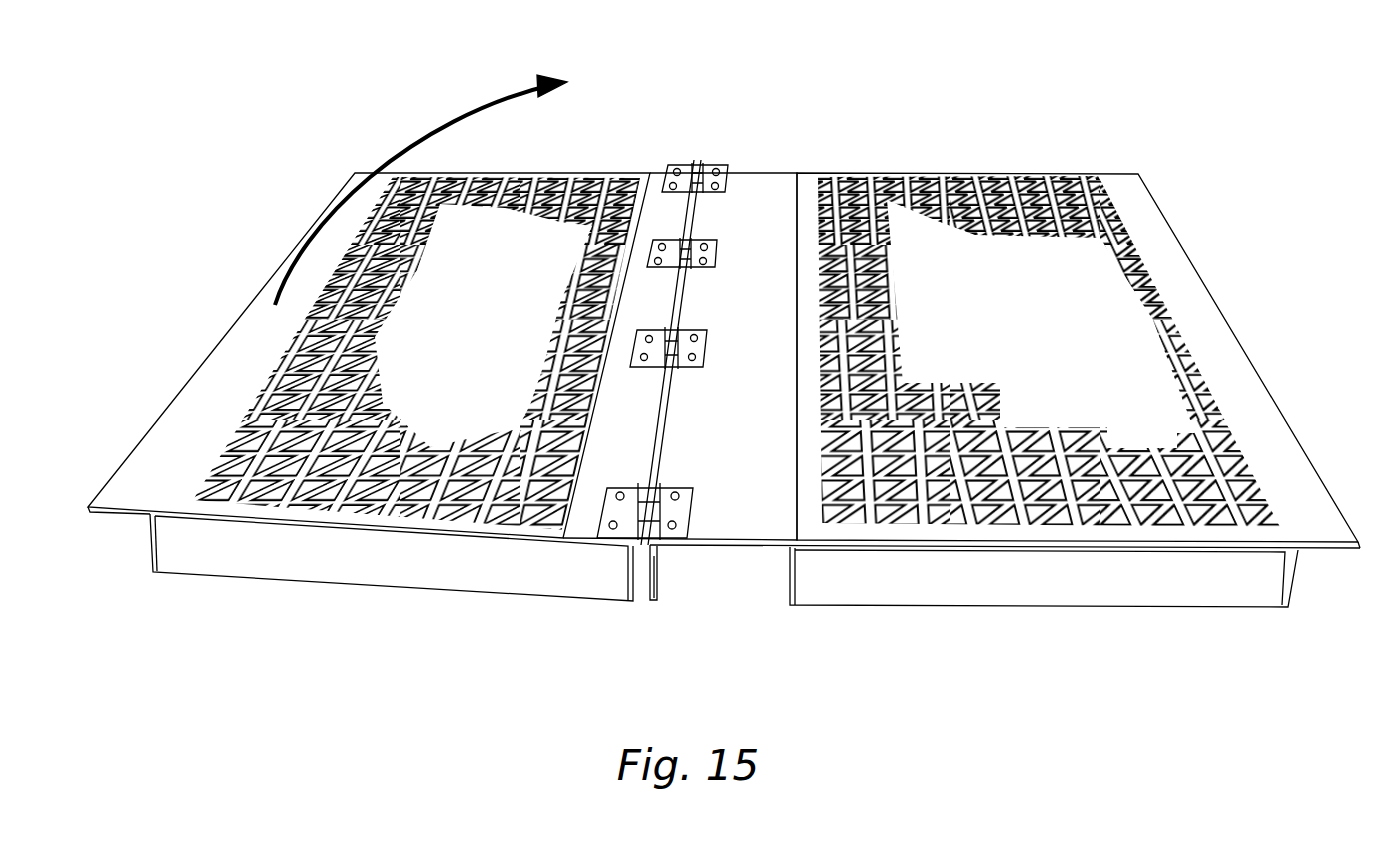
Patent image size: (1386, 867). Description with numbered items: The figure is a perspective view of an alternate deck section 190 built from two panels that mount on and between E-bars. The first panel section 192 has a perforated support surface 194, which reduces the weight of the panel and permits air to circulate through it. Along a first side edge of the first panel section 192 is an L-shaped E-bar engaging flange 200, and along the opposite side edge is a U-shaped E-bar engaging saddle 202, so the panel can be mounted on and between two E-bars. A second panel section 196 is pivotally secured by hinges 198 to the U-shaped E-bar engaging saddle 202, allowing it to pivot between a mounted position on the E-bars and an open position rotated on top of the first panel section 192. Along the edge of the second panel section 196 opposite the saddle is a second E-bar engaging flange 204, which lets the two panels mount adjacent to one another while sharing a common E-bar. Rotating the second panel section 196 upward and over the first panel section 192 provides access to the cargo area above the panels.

The deck section 190 is at (790, 133).
The first panel section 192 is at (872, 588).
The perforated support surface 194 is at (1003, 188).
The second panel section 196 is at (353, 550).
The hinges 198 is at (686, 160).
The L-shaped E-bar engaging flange 200 is at (1208, 336).
The U-shaped E-bar engaging saddle 202 is at (737, 518).
The second E-bar engaging flange 204 is at (222, 358).